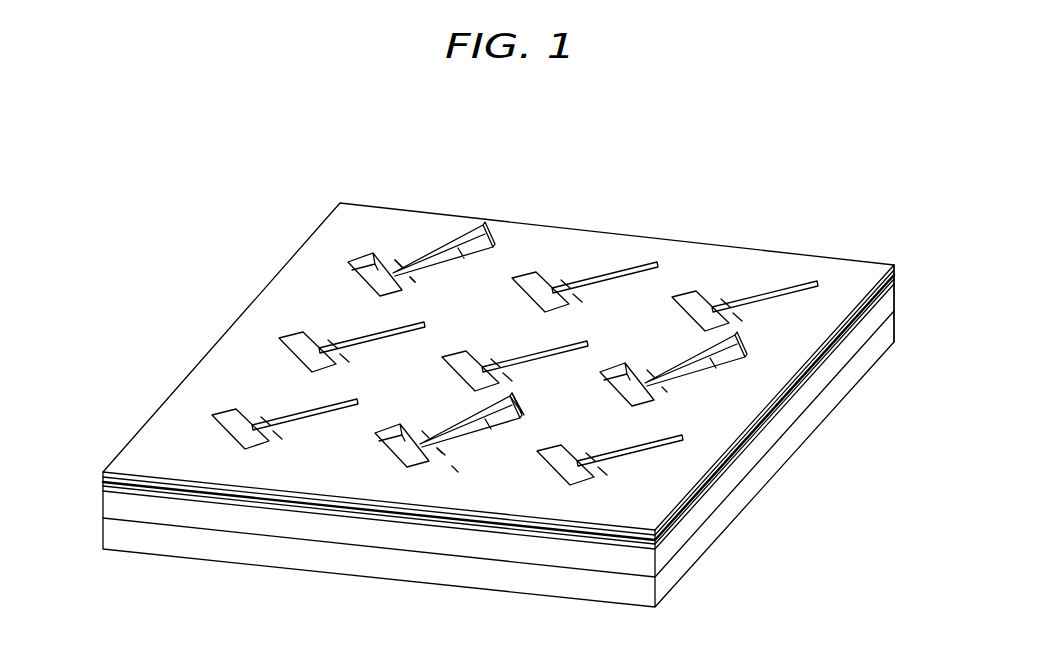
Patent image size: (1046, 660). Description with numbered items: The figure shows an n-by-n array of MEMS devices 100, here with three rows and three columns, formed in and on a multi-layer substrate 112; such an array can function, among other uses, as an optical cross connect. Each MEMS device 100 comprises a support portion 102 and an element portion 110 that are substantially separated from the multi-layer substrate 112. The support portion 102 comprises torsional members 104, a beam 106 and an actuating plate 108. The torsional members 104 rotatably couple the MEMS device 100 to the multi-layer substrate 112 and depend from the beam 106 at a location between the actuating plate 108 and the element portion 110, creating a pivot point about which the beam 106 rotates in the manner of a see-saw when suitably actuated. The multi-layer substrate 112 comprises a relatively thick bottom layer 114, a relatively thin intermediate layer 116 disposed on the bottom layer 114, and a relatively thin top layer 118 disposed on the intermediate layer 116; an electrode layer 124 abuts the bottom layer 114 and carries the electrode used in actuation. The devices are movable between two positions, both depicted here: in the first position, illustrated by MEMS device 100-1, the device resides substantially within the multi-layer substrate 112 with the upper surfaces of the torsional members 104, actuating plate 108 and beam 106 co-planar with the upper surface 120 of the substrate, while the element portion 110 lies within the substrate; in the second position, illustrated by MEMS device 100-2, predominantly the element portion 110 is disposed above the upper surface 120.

The MEMS device 100 is at (422, 327).
The MEMS device in first position 100-1 is at (620, 262).
The MEMS device in second position 100-2 is at (678, 363).
The support portion 102 is at (466, 225).
The torsional members 104 is at (417, 277).
The beam 106 is at (460, 417).
The actuating plate 108 is at (400, 452).
The element portion 110 is at (521, 412).
The multi-layer substrate 112 is at (900, 288).
The bottom layer 114 is at (167, 515).
The intermediate layer 116 is at (122, 487).
The top layer 118 is at (140, 482).
The upper surface 120 is at (235, 360).
The electrode layer 124 is at (537, 583).